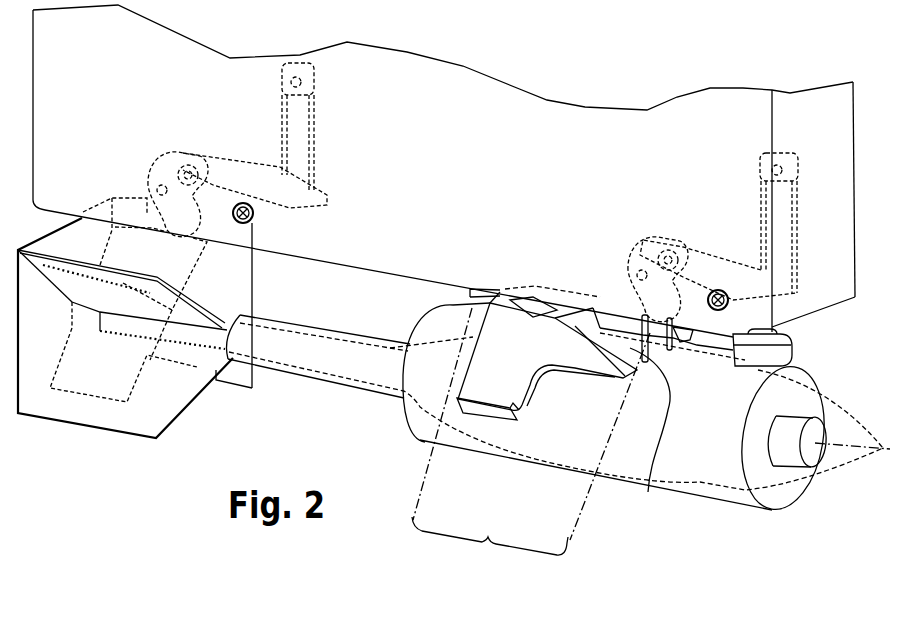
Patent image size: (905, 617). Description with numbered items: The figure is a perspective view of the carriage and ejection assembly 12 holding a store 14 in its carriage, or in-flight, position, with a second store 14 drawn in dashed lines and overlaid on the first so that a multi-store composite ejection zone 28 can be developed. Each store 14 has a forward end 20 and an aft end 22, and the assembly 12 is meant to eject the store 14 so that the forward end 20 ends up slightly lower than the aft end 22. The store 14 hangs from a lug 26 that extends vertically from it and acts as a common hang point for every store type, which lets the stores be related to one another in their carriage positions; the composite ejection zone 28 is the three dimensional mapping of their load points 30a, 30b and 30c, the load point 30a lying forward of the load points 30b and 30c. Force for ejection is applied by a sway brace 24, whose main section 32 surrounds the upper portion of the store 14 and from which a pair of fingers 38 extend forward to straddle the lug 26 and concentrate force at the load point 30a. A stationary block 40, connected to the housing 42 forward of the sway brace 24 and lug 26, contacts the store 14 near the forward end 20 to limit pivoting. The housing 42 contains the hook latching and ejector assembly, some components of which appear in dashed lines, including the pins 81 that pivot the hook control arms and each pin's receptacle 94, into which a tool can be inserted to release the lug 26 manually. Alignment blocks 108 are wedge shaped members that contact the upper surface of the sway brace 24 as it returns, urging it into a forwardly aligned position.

The carriage and ejection assembly 12 is at (560, 65).
The store 14 is at (743, 493).
The forward end 20 is at (803, 422).
The aft end 22 is at (90, 410).
The sway brace 24 is at (510, 346).
The lug 26 is at (646, 410).
The composite ejection zone 28 is at (490, 547).
The load point 30a is at (550, 490).
The load point 30b is at (485, 482).
The load point 30c is at (455, 460).
The main section 32 is at (412, 425).
The finger 38 is at (580, 358).
The stationary block 40 is at (788, 350).
The housing 42 is at (703, 115).
The pin 81 is at (300, 172).
The receptacle 94 is at (240, 203).
The alignment block 108 is at (470, 295).